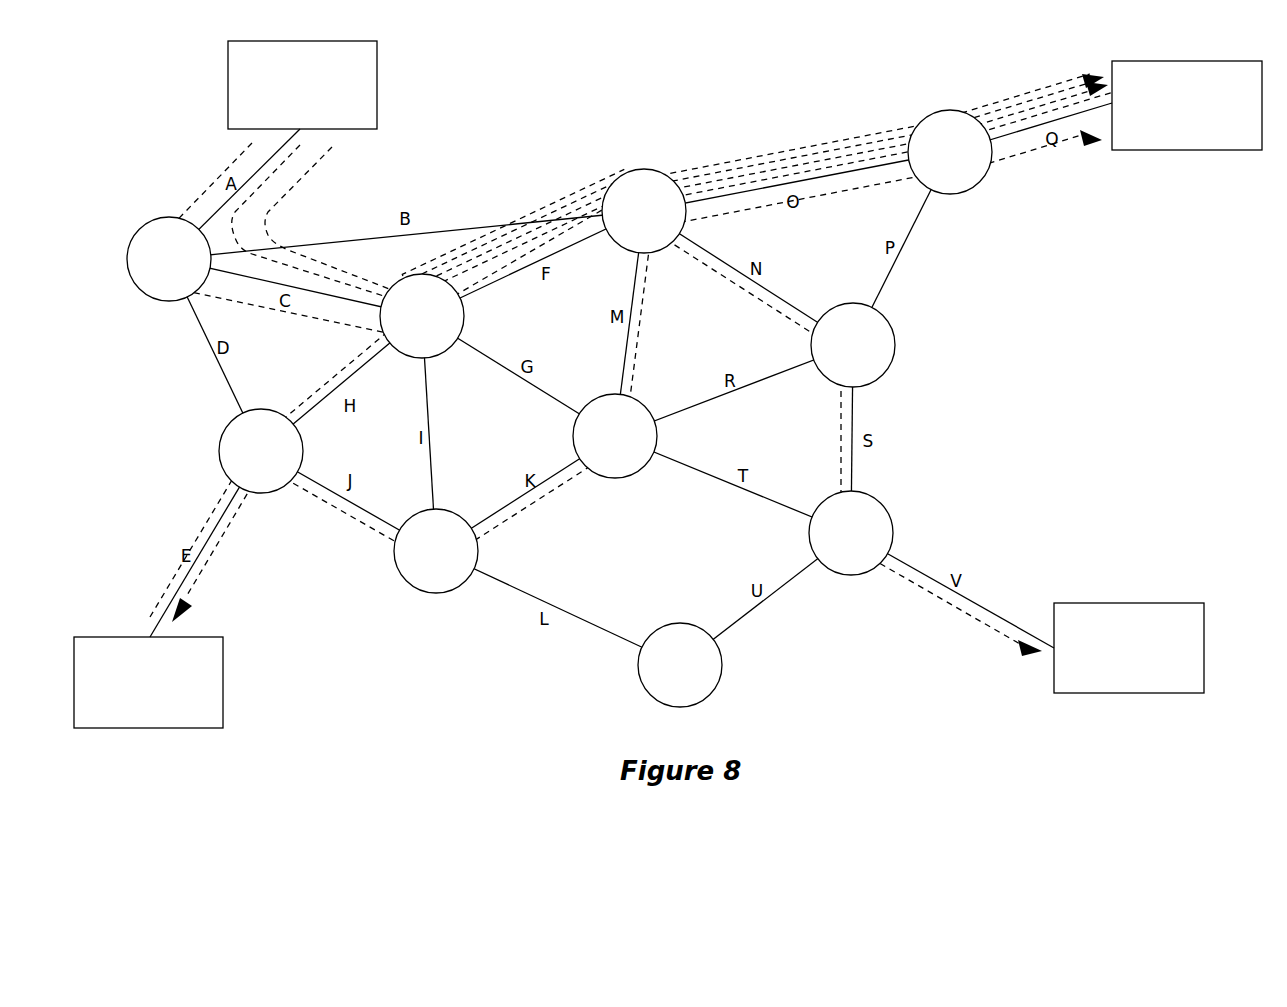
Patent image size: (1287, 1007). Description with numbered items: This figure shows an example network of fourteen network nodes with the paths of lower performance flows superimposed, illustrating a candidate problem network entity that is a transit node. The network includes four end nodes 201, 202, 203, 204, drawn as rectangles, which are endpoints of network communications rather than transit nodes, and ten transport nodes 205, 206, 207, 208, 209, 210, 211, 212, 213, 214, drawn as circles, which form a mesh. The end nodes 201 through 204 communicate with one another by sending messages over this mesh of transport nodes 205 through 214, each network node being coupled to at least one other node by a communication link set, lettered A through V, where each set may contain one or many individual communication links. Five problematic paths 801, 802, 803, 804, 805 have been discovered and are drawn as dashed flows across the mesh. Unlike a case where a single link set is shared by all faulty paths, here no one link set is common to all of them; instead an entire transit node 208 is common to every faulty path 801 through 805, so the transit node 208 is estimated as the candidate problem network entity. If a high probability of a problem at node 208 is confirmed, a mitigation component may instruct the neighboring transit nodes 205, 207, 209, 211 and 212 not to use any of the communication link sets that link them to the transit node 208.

The end node 201 is at (302, 85).
The end node 202 is at (1187, 105).
The end node 203 is at (148, 682).
The end node 204 is at (1129, 648).
The transport node 205 is at (148, 234).
The transport node 206 is at (217, 451).
The transport node 207 is at (440, 356).
The transit node 208 is at (644, 169).
The transport node 209 is at (617, 478).
The transport node 210 is at (444, 593).
The transport node 211 is at (972, 185).
The transport node 212 is at (896, 348).
The transport node 213 is at (717, 686).
The transport node 214 is at (842, 584).
The problematic path 801 is at (210, 183).
The problematic path 802 is at (306, 172).
The problematic path 803 is at (717, 274).
The problematic path 804 is at (222, 548).
The problematic path 805 is at (206, 518).